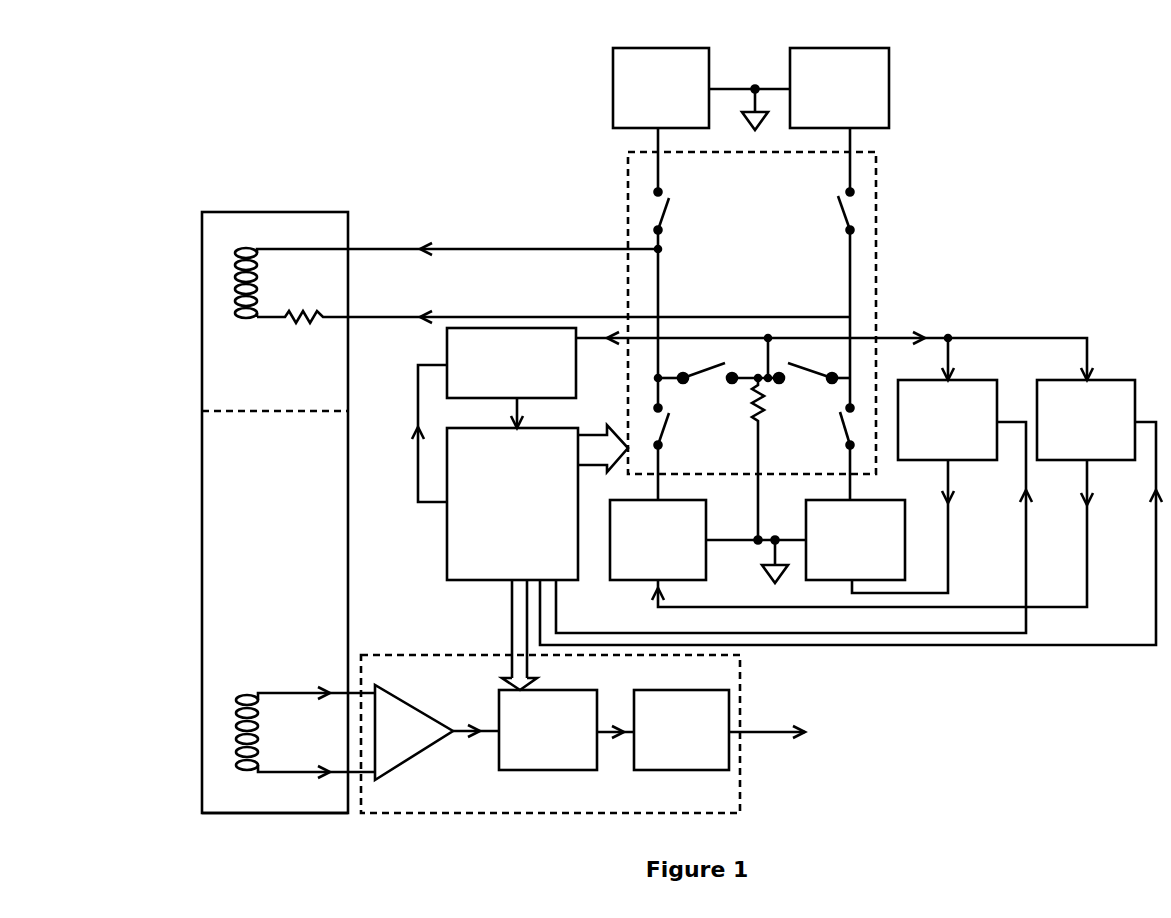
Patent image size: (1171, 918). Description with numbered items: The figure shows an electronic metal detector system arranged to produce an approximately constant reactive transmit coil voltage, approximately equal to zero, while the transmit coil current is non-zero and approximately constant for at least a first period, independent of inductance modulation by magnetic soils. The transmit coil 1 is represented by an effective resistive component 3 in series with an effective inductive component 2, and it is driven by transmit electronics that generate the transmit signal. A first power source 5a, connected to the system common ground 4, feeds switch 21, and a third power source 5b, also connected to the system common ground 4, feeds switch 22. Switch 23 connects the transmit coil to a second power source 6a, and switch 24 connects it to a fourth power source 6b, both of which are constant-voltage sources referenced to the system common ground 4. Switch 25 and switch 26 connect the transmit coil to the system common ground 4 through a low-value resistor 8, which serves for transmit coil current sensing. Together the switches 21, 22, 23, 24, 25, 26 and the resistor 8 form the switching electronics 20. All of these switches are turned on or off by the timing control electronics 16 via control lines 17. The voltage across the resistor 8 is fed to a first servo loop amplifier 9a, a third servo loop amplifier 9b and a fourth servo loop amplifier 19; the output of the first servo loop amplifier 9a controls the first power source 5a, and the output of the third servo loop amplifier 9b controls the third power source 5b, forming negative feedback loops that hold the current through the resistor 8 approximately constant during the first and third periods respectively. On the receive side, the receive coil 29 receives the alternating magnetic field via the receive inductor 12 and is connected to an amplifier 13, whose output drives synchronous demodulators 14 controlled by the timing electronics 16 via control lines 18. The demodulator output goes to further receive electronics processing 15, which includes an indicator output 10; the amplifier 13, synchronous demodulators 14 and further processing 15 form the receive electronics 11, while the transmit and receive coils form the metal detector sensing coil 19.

The transmit coil 1 is at (275, 396).
The effective inductive component 2 is at (258, 300).
The effective resistive component 3 is at (292, 333).
The system common ground 4 is at (745, 115).
The first power source 5a is at (708, 540).
The third power source 5b is at (855, 540).
The second power source 6a is at (661, 120).
The fourth power source 6b is at (799, 120).
The resistor 8 is at (750, 412).
The first servo loop amplifier 9a is at (851, 488).
The third servo loop amplifier 9b is at (794, 482).
The indicator output 10 is at (784, 733).
The receive electronics 11 is at (613, 813).
The receive inductor 12 is at (260, 737).
The amplifier 13 is at (437, 732).
The synchronous demodulators 14 is at (566, 730).
The further receive electronics processing 15 is at (681, 730).
The timing control electronics 16 is at (495, 472).
The control lines 17 is at (600, 432).
The control lines 18 is at (510, 612).
The fourth servo loop amplifier 19 is at (193, 507).
The switching electronics 20 is at (628, 287).
The switch 21 is at (677, 417).
The switch 22 is at (842, 418).
The switch 23 is at (667, 212).
The switch 24 is at (838, 196).
The switch 25 is at (705, 365).
The switch 26 is at (805, 364).
The receive coil 29 is at (275, 705).